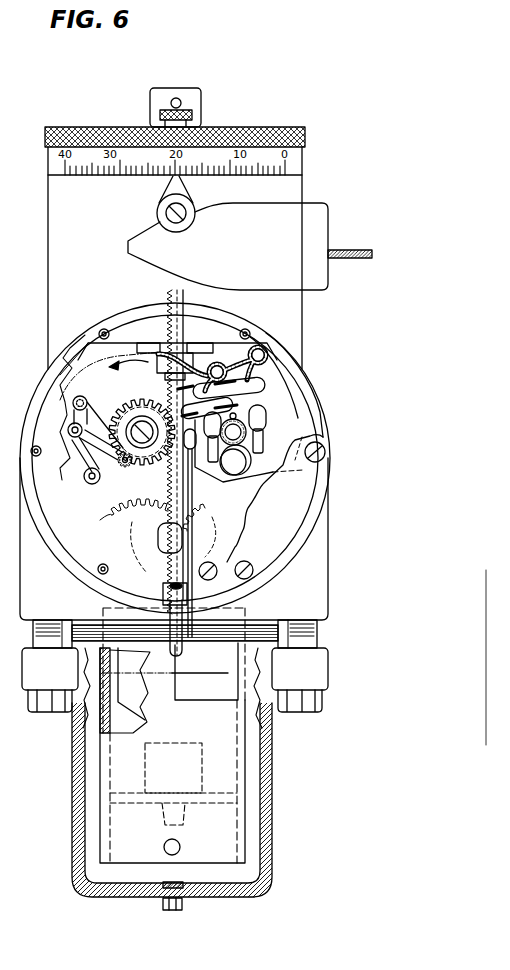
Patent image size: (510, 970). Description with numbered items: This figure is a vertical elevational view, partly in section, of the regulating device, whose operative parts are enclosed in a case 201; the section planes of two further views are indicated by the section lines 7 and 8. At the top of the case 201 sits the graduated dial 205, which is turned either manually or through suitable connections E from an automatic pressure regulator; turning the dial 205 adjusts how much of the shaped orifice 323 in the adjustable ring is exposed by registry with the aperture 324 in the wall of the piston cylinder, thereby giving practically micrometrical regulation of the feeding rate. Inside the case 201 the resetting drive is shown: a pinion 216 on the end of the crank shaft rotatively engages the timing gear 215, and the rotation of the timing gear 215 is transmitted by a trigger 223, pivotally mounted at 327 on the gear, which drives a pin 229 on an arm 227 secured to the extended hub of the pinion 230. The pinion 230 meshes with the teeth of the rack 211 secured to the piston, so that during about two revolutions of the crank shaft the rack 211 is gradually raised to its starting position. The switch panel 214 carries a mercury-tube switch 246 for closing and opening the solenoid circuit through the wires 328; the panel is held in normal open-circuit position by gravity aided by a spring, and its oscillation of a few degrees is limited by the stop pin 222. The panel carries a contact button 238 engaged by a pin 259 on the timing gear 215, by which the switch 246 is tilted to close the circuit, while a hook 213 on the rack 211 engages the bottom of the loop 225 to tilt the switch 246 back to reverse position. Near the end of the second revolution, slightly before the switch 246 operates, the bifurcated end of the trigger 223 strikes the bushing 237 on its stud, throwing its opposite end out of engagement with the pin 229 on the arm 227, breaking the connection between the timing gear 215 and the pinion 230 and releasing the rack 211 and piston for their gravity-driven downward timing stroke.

The section line 7- 7 is at (176, 88).
The section line 8- 8 is at (6, 507).
The connections E is at (345, 249).
The graduated dial 205 is at (62, 127).
The case 201 is at (48, 298).
The wires 328 is at (265, 354).
The switch 246 is at (290, 388).
The switch panel 214 is at (313, 397).
The stop pin 222 is at (258, 484).
The contact button 238 is at (222, 398).
The bushing 237 is at (242, 440).
The trigger 223 is at (93, 378).
The pin 259 is at (87, 395).
The pivot 327 is at (65, 472).
The pin 229 is at (97, 486).
The arm 227 is at (128, 467).
The pinion 230 is at (121, 405).
The timing gear 215 is at (98, 516).
The pinion 216 is at (202, 512).
The hook 213 is at (202, 552).
The rack 211 is at (159, 473).
The loop 225 is at (199, 497).
The orifice 323 is at (141, 706).
The aperture 324 is at (192, 705).